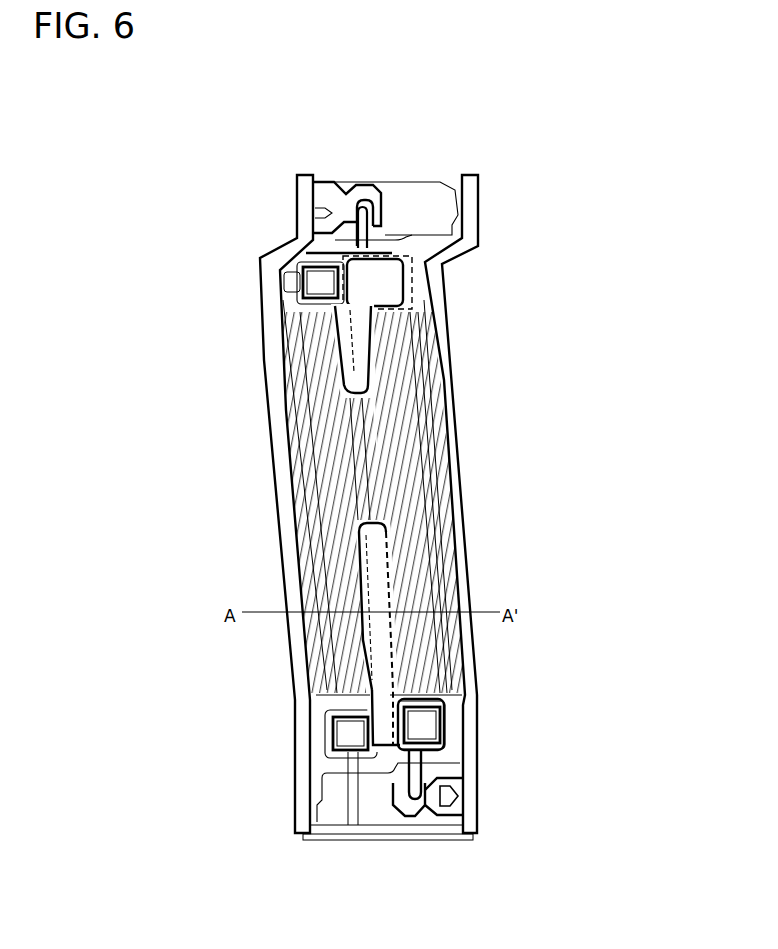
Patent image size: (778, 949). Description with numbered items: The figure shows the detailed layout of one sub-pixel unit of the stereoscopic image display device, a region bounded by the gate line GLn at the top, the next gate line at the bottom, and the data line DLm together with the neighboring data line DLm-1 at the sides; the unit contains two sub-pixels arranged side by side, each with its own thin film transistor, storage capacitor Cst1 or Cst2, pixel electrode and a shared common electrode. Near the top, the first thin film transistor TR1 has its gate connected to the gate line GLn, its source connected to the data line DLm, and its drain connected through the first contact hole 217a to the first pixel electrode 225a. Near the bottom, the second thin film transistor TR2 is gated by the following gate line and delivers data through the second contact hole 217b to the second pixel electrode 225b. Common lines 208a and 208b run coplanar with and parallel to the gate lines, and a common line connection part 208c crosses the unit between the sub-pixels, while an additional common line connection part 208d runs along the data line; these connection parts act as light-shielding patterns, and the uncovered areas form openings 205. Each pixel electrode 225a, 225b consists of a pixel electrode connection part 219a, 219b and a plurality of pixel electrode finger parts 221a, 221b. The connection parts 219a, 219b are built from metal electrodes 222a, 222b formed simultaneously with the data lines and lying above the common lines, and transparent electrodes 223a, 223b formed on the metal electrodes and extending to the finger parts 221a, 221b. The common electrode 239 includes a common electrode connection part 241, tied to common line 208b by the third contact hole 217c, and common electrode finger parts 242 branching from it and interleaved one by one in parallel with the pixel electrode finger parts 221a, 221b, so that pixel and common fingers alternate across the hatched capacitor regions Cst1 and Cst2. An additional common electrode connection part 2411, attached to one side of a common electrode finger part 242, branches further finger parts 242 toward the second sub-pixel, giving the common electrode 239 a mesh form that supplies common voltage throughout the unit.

The nth gate line GLn is at (415, 191).
The mth data line DLm is at (303, 206).
The previous data line DLm-1 is at (470, 213).
The first thin film transistor TR1 is at (452, 263).
The second thin film transistor TR2 is at (440, 766).
The openings 205 is at (383, 424).
The common line 208a is at (412, 268).
The common line 208b is at (385, 764).
The common line connection part 208c is at (380, 483).
The additional common line connection part 208d is at (305, 511).
The first contact hole 217a is at (300, 269).
The second contact hole 217b is at (440, 739).
The third contact hole 217c is at (340, 736).
The first pixel electrode connection part 219a is at (236, 287).
The second pixel electrode connection part 219b is at (510, 724).
The first pixel electrode finger parts 221a is at (303, 359).
The second pixel electrode finger parts 221b is at (453, 653).
The metal electrode 222a is at (300, 298).
The metal electrode 222b is at (450, 713).
The transparent electrode 223a is at (315, 284).
The transparent electrode 223b is at (432, 725).
The first pixel electrode 225a is at (221, 366).
The second pixel electrode 225b is at (534, 609).
The common electrode 239 is at (276, 535).
The common electrode connection part 241 is at (330, 711).
The common electrode finger parts 242 is at (323, 663).
The additional common electrode connection part 2411 is at (420, 297).
The storage capacitor Cst1 is at (423, 329).
The storage capacitor Cst2 is at (395, 553).